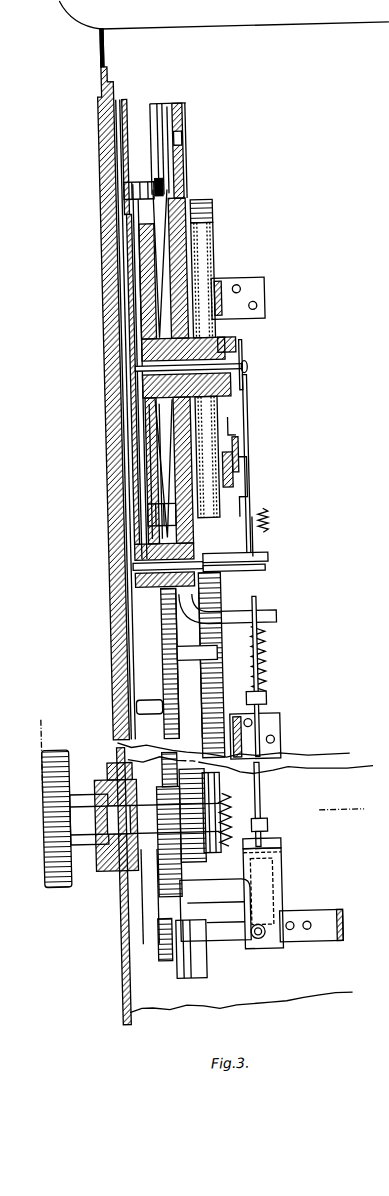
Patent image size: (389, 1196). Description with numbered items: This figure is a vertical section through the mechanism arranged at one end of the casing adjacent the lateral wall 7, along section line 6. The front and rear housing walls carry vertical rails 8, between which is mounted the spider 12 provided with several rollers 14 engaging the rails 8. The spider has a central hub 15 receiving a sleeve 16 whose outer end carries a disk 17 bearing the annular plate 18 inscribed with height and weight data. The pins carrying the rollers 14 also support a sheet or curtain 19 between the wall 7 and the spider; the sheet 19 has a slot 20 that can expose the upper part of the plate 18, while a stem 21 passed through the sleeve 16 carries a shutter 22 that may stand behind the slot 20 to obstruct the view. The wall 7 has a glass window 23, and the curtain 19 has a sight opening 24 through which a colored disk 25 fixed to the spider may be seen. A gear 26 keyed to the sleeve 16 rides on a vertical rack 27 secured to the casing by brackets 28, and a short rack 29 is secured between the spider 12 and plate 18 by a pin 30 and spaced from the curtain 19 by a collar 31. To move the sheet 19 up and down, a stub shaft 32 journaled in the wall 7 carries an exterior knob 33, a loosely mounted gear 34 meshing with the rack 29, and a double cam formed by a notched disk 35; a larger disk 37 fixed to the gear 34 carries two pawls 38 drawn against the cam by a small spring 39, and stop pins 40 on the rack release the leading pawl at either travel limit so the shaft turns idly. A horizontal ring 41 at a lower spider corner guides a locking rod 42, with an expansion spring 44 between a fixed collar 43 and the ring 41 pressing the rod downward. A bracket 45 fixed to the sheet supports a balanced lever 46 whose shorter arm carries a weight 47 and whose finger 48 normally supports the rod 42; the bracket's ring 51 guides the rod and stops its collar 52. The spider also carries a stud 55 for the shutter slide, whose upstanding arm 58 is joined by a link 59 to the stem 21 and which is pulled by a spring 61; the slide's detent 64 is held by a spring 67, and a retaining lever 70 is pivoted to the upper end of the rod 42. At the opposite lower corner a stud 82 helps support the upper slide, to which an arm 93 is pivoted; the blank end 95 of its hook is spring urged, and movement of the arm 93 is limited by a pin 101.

The section line 6 is at (207, 761).
The lateral wall 7 is at (100, 50).
The vertical rails 8 is at (152, 112).
The spider 12 is at (181, 180).
The rollers 14 is at (120, 184).
The central hub 15 is at (134, 350).
The sleeve 16 is at (150, 395).
The disk 17 is at (142, 418).
The annular plate 18 is at (146, 462).
The sheet or curtain 19 is at (138, 494).
The slot 20 is at (128, 237).
The stem 21 is at (220, 354).
The shutter 22 is at (133, 262).
The glass window 23 is at (100, 307).
The sight opening 24 is at (121, 133).
The colored disk 25 is at (165, 115).
The gear 26 is at (207, 254).
The vertical rack 27 is at (208, 212).
The brackets 28 is at (257, 293).
The short rack 29 is at (147, 675).
The pin 30 is at (125, 567).
The collar 31 is at (132, 578).
The stub shaft 32 is at (90, 850).
The exterior knob 33 is at (42, 884).
The gear 34 is at (100, 890).
The disk 35 is at (210, 808).
The larger disk 37 is at (214, 935).
The pawls 38 is at (262, 855).
The spring 39 is at (212, 825).
The stop pins 40 is at (170, 650).
The horizontal ring 41 is at (258, 620).
The locking rod 42 is at (244, 710).
The fixed collar 43 is at (252, 700).
The expansion spring 44 is at (251, 668).
The bracket 45 is at (261, 870).
The balanced lever 46 is at (320, 922).
The weight 47 is at (142, 962).
The finger 48 is at (255, 888).
The ring 51 is at (250, 840).
The collar 52 is at (249, 828).
The stud 55 is at (250, 548).
The upstanding arm 58 is at (239, 430).
The link 59 is at (238, 378).
The spring 61 is at (160, 598).
The detent 64 is at (240, 550).
The spring 67 is at (256, 520).
The retaining lever 70 is at (240, 572).
The stud 82 is at (228, 450).
The arm 93 is at (222, 465).
The blank end 95 is at (228, 436).
The pin 101 is at (236, 478).